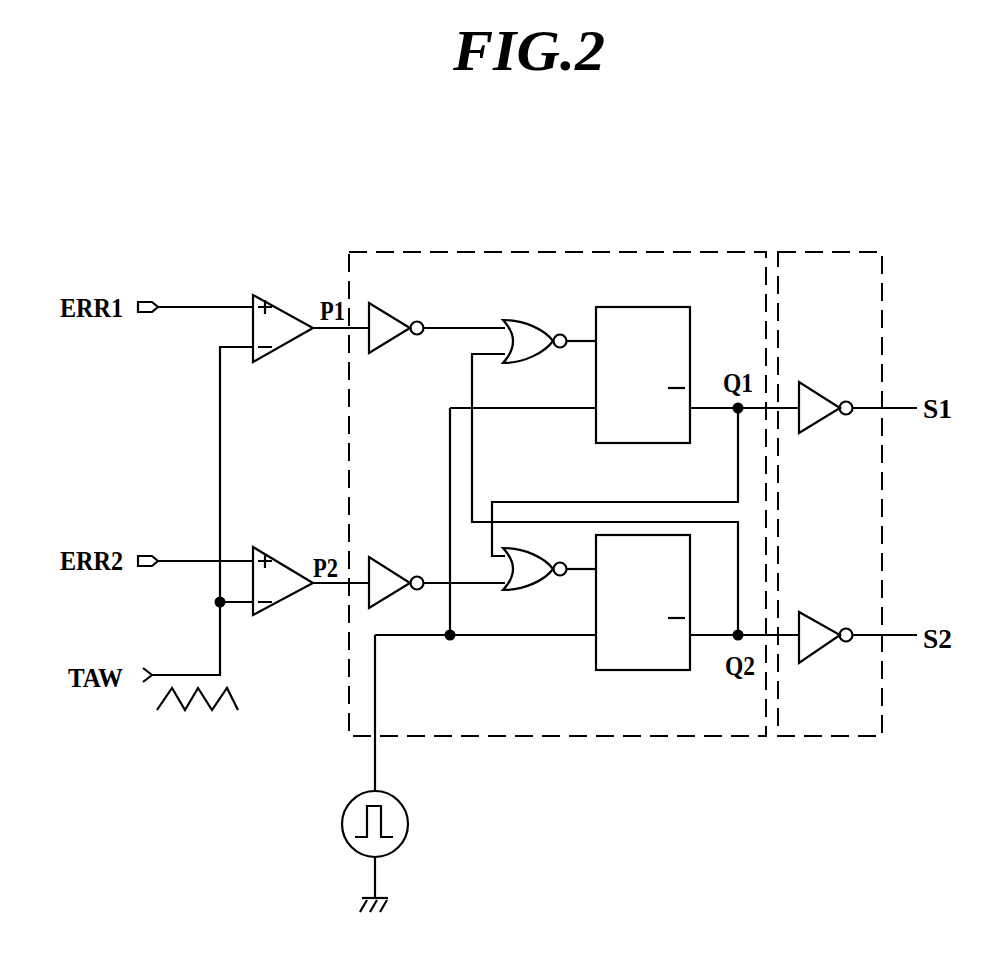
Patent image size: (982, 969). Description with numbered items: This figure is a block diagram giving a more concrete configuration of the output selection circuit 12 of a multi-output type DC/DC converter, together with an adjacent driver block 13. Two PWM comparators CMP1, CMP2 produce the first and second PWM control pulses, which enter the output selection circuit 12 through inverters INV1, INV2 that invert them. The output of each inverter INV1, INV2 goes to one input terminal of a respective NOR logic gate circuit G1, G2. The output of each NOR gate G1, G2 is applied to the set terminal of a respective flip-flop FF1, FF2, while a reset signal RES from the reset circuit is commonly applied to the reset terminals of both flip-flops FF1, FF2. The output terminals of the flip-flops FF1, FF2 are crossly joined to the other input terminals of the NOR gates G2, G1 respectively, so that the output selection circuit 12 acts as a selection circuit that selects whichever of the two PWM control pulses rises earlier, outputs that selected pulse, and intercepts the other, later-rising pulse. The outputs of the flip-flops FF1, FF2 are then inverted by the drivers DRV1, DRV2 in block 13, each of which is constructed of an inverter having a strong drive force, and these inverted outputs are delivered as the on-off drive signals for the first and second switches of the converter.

The output selection circuit 12 is at (641, 252).
The driver circuit block 13 is at (817, 252).
The PWM comparator CMP1 is at (277, 351).
The PWM comparator CMP2 is at (273, 606).
The inverter INV1 is at (395, 308).
The inverter INV2 is at (388, 567).
The NOR logic gate circuit G1 is at (537, 318).
The NOR logic gate circuit G2 is at (533, 591).
The flip-flop FF1 is at (650, 444).
The flip-flop FF2 is at (645, 671).
The driver DRV1 is at (832, 393).
The driver DRV2 is at (832, 630).
The reset signal RES is at (403, 773).